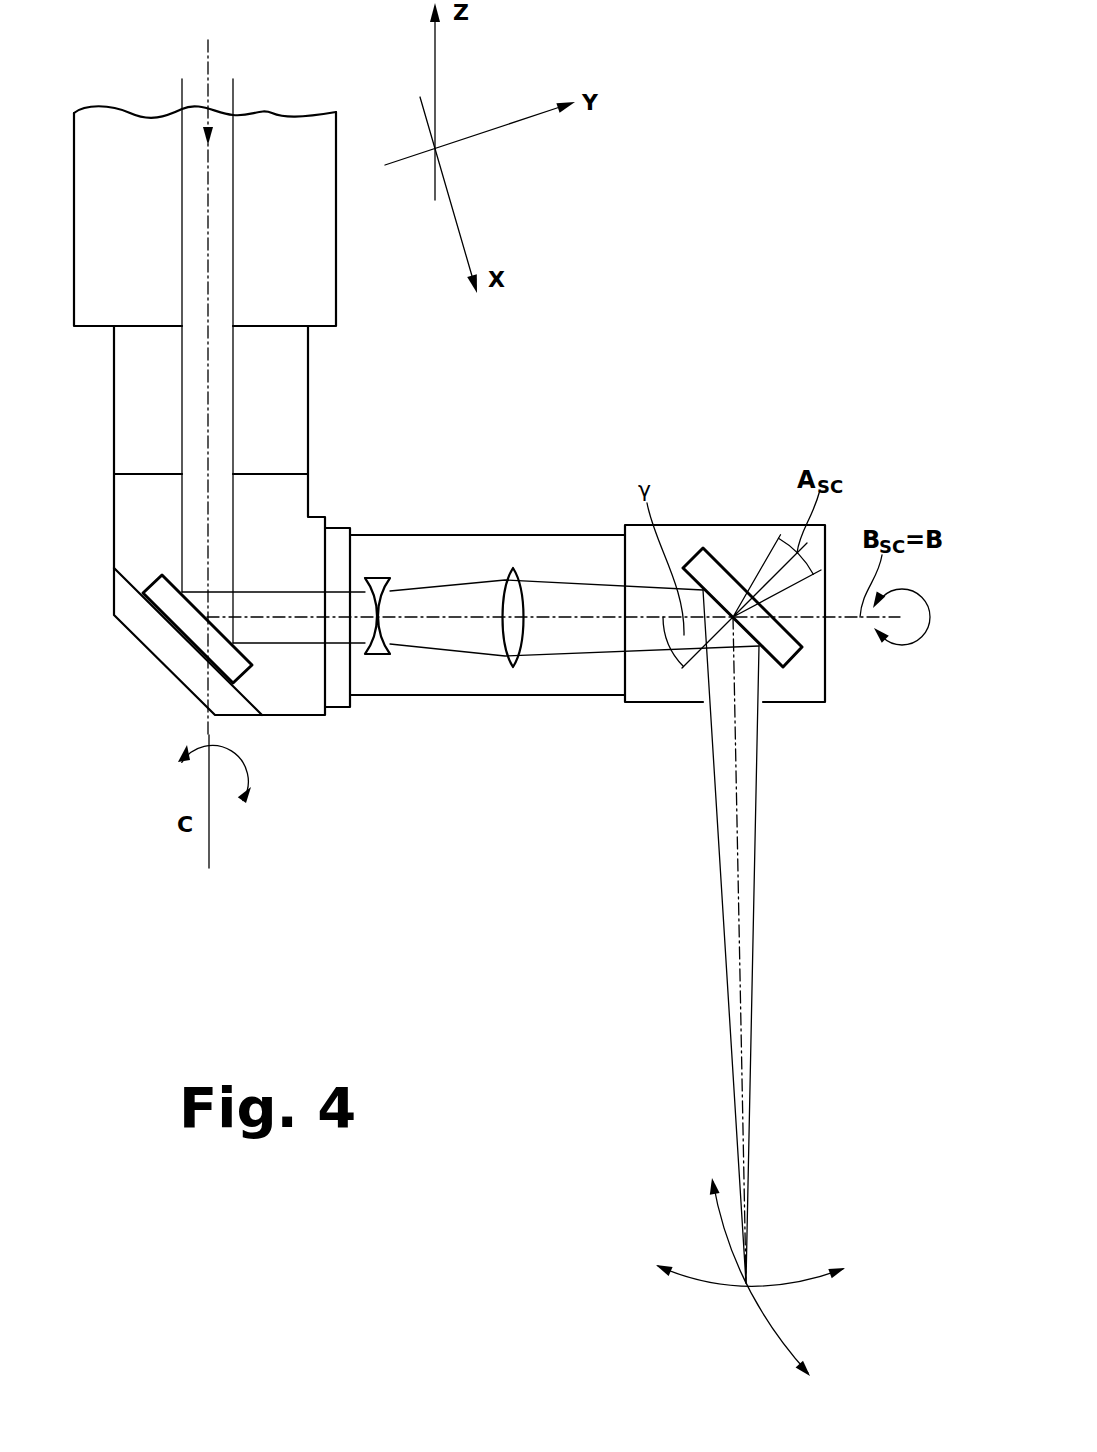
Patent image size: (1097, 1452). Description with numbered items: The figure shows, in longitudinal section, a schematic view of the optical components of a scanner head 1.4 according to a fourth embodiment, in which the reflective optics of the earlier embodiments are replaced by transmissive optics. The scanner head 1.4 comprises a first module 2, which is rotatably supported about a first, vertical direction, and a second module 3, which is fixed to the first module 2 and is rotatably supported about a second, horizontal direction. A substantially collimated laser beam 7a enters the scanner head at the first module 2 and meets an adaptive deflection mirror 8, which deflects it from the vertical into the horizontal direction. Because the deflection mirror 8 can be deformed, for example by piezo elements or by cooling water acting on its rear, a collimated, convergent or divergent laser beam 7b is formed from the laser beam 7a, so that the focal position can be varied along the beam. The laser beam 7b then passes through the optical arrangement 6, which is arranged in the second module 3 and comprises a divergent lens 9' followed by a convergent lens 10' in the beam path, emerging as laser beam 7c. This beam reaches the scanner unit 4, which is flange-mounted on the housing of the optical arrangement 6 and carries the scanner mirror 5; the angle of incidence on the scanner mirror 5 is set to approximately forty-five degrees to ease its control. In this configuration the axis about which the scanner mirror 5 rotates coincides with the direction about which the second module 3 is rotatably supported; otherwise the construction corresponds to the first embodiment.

The scanner head 1.4 is at (598, 312).
The first module 2 is at (112, 532).
The second module 3 is at (587, 661).
The scanner unit 4 is at (723, 523).
The scanner mirror 5 is at (787, 648).
The optical arrangement 6 is at (460, 535).
The laser beam 7a is at (207, 388).
The laser beam 7b is at (277, 620).
The laser beam 7c is at (586, 617).
The adaptive deflection mirror 8 is at (172, 598).
The divergent lens 9' is at (387, 574).
The convergent lens 10' is at (508, 672).